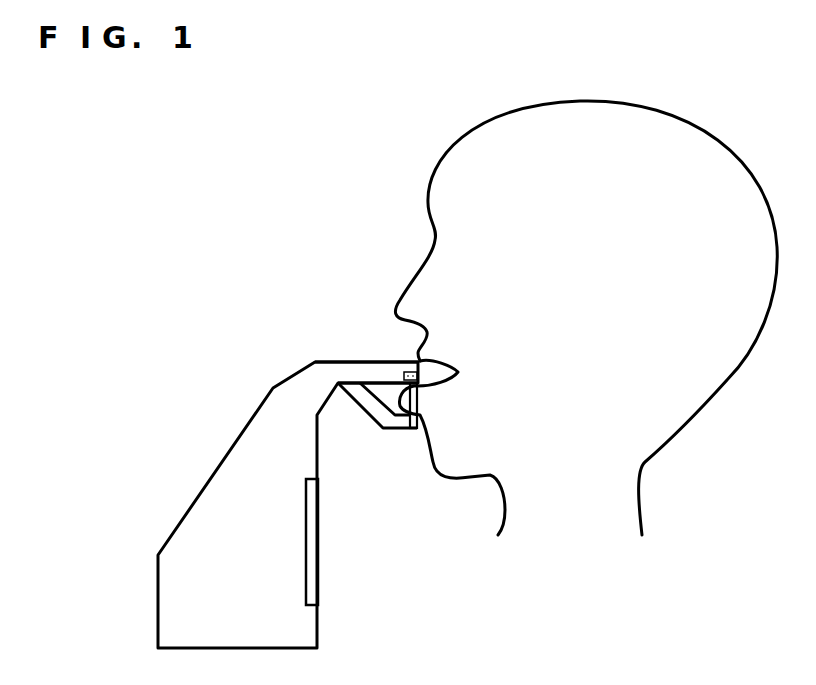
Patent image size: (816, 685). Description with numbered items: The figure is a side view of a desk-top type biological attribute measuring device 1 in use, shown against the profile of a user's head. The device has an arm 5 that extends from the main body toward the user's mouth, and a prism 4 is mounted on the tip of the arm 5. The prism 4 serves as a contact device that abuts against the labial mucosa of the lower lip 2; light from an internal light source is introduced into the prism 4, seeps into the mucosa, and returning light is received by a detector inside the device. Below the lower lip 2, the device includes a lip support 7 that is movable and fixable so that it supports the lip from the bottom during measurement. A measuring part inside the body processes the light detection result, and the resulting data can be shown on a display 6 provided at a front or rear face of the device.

The biological attribute measuring device 1 is at (207, 523).
The lower lip 2 is at (412, 398).
The prism 4 is at (413, 362).
The arm 5 is at (378, 373).
The display 6 is at (312, 566).
The lip support 7 is at (413, 428).